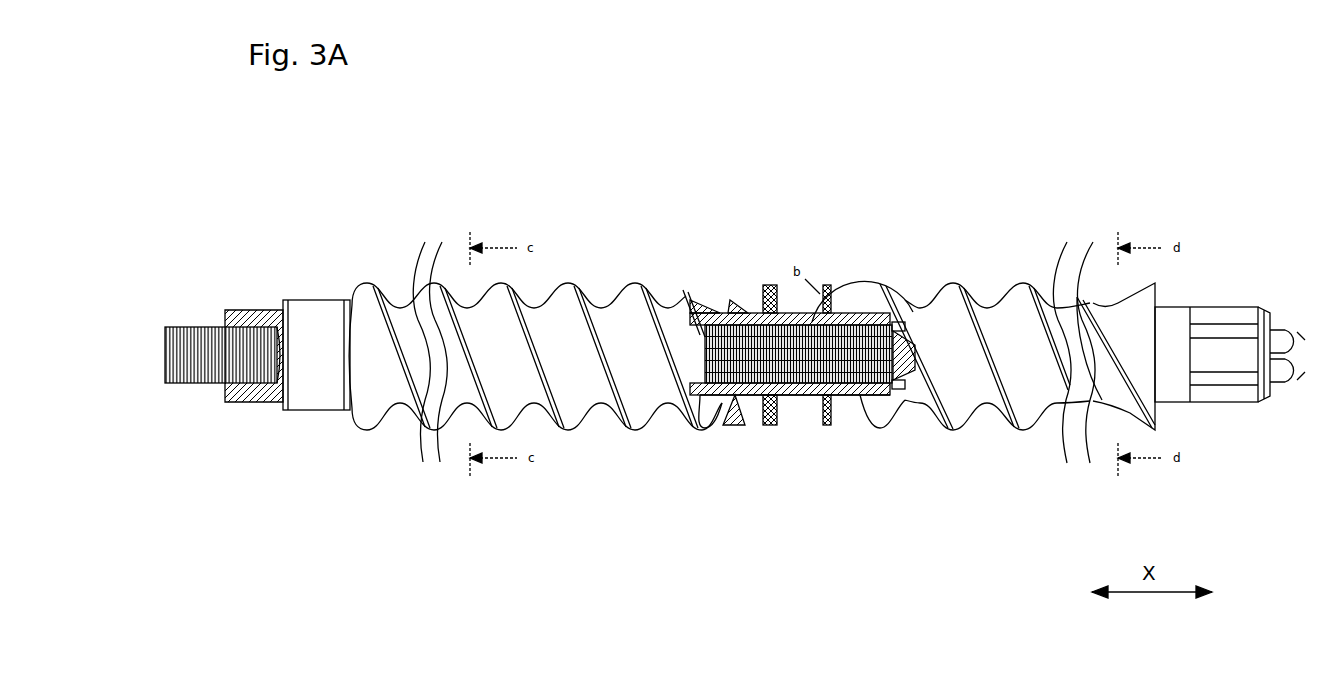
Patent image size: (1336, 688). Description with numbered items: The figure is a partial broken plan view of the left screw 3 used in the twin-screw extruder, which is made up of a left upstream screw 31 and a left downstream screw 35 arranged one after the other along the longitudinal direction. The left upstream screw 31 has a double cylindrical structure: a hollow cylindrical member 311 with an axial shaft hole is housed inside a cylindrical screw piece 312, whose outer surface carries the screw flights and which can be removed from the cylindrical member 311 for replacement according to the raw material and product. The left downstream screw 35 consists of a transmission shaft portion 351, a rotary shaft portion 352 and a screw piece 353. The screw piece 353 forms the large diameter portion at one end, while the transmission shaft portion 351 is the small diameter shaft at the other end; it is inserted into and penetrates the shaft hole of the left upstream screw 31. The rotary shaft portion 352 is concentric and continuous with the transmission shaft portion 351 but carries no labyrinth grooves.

The left screw 3 is at (1212, 263).
The left upstream screw 31 is at (633, 232).
The cylindrical member 311 is at (646, 312).
The screw piece 312 is at (727, 300).
The left downstream screw 35 is at (905, 234).
The transmission shaft portion 351 is at (884, 294).
The rotary shaft portion 352 is at (930, 318).
The screw piece 353 is at (1014, 301).